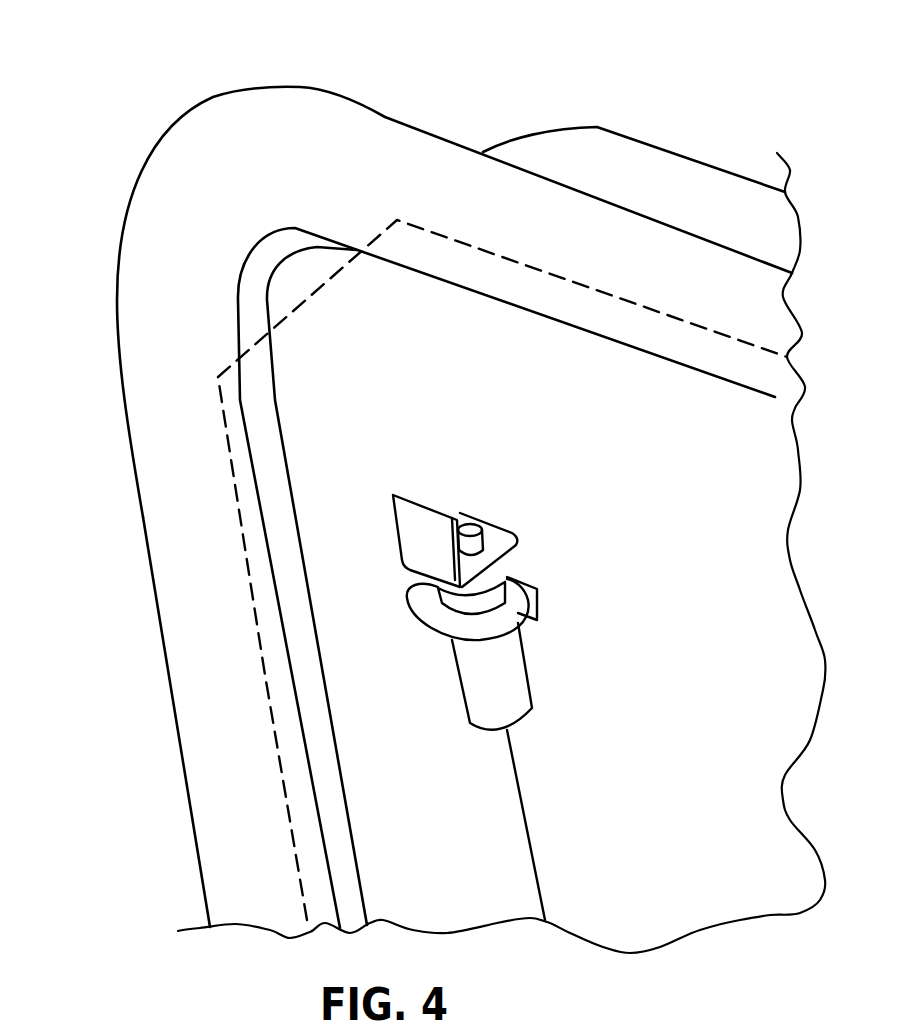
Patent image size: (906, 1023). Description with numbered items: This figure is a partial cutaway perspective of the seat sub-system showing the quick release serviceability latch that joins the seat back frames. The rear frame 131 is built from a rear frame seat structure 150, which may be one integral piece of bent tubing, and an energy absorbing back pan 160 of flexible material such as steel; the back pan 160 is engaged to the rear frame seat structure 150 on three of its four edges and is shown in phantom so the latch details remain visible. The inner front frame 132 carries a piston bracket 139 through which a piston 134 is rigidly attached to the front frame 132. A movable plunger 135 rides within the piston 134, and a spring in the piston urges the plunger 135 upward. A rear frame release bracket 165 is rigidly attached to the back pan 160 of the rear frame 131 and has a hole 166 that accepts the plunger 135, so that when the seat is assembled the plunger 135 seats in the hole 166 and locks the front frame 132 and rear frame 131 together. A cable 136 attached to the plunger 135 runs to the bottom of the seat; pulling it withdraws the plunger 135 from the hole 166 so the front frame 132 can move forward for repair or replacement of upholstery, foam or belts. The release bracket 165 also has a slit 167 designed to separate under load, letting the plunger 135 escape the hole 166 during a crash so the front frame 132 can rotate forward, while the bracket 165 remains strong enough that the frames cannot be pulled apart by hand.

The rear frame 131 is at (214, 96).
The front frame 132 is at (583, 120).
The piston 134 is at (540, 676).
The plunger 135 is at (463, 523).
The cable 136 is at (537, 845).
The piston bracket 139 is at (543, 583).
The rear frame seat structure 150 is at (140, 524).
The back pan 160 is at (252, 650).
The rear frame release bracket 165 is at (402, 495).
The hole 166 is at (492, 541).
The slit 167 is at (495, 520).